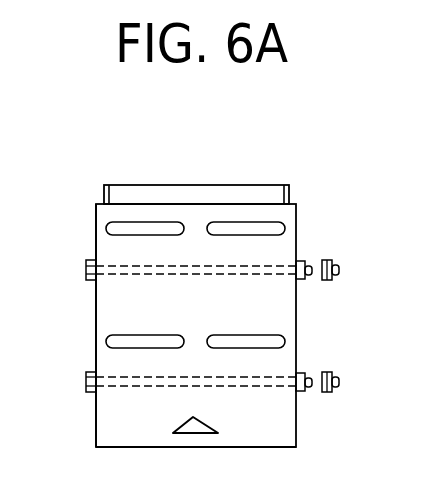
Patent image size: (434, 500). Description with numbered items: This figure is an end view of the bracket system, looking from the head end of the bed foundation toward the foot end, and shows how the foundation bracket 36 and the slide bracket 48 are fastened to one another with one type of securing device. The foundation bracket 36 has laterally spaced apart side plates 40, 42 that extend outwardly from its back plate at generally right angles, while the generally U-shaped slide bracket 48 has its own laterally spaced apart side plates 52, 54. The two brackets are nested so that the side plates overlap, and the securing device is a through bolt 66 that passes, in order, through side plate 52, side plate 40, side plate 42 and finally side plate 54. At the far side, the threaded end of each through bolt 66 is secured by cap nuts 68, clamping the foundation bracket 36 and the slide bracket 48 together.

The foundation bracket 36 is at (257, 193).
The side plate 40 is at (102, 188).
The side plate 42 is at (287, 196).
The slide bracket 48 is at (296, 418).
The side plate 52 is at (95, 223).
The side plate 54 is at (297, 224).
The through bolt 66 is at (87, 278).
The cap nuts 68 is at (324, 282).